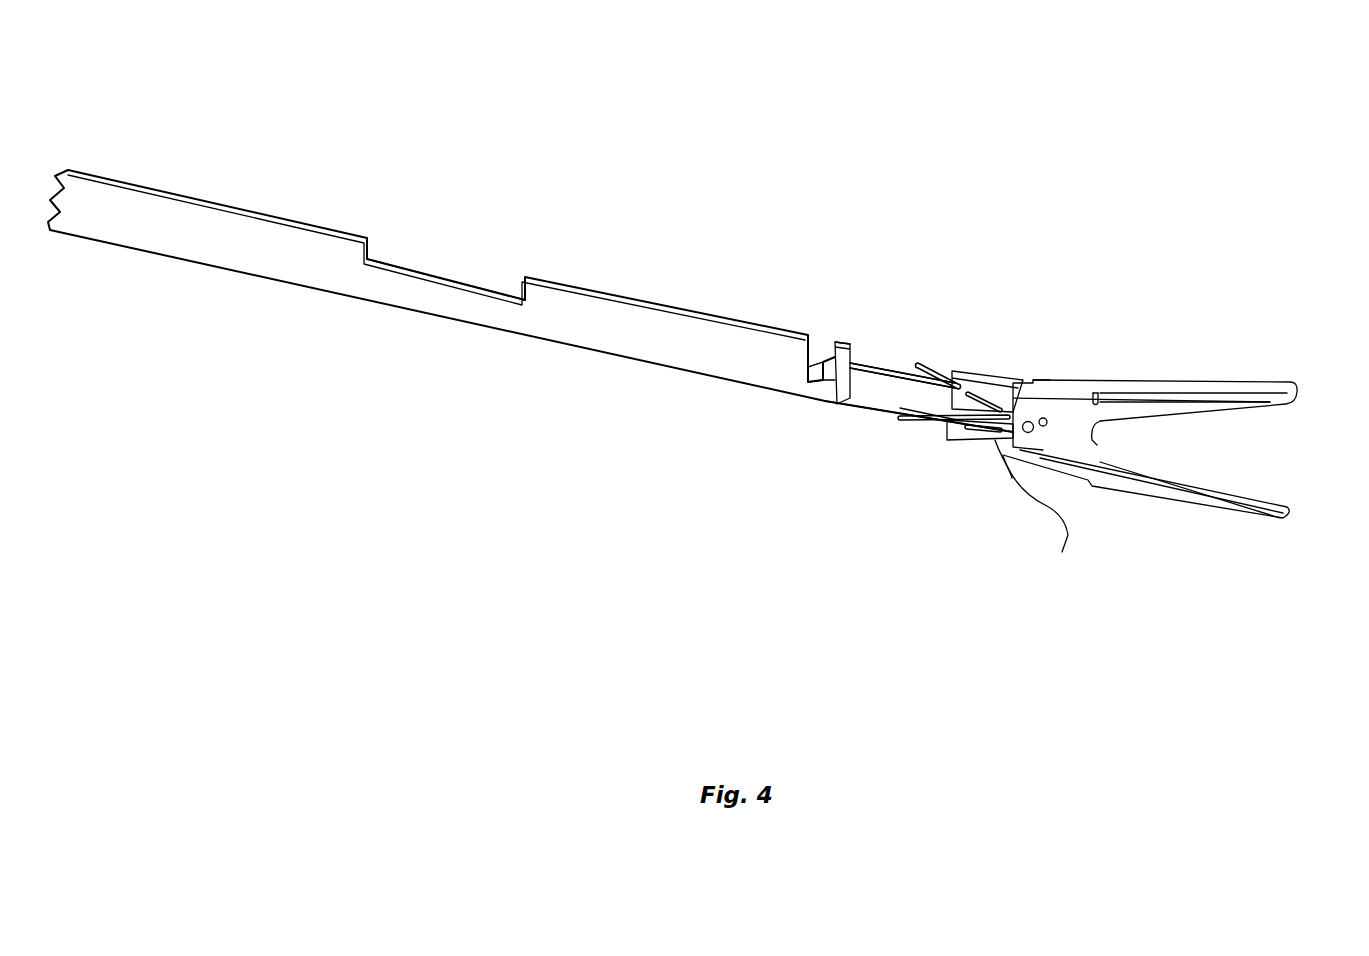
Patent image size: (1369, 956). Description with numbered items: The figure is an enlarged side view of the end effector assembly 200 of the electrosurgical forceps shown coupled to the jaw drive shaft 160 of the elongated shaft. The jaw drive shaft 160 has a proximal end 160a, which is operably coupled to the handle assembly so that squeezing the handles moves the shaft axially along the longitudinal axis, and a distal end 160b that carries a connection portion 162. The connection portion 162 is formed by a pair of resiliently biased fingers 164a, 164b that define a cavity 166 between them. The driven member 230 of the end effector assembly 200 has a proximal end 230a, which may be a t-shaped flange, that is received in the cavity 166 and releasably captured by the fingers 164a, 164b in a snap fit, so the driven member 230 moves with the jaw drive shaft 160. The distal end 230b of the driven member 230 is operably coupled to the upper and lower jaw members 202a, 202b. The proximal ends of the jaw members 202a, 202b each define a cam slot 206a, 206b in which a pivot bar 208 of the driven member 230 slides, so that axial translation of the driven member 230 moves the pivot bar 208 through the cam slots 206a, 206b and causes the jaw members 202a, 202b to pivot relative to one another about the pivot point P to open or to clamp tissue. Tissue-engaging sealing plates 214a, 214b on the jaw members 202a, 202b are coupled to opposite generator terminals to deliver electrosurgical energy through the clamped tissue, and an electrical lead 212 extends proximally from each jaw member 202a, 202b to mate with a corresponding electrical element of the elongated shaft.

The jaw drive shaft 160 is at (560, 268).
The proximal end of jaw drive shaft 160a is at (100, 177).
The distal end of jaw drive shaft 160b is at (777, 330).
The connection portion 162 is at (856, 334).
The resiliently biased finger 164a is at (828, 410).
The resiliently biased finger 164b is at (838, 340).
The cavity 166 is at (828, 354).
The end effector assembly 200 is at (1192, 338).
The jaw member 202a is at (1227, 388).
The jaw member 202b is at (1163, 510).
The cam slot 206a is at (1008, 378).
The cam slot 206b is at (967, 425).
The pivot bar 208 is at (1062, 549).
The electrical lead 212 is at (945, 368).
The tissue-engaging sealing plate 214a is at (1243, 410).
The tissue-engaging sealing plate 214b is at (1240, 492).
The driven member 230 is at (883, 407).
The proximal end of driven member 230a is at (870, 363).
The distal end of driven member 230b is at (947, 417).
The pivot point P is at (1083, 382).